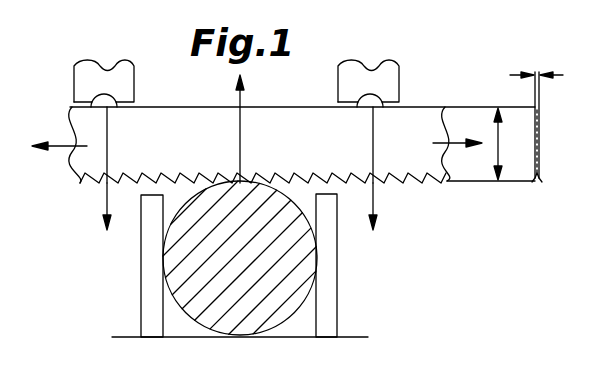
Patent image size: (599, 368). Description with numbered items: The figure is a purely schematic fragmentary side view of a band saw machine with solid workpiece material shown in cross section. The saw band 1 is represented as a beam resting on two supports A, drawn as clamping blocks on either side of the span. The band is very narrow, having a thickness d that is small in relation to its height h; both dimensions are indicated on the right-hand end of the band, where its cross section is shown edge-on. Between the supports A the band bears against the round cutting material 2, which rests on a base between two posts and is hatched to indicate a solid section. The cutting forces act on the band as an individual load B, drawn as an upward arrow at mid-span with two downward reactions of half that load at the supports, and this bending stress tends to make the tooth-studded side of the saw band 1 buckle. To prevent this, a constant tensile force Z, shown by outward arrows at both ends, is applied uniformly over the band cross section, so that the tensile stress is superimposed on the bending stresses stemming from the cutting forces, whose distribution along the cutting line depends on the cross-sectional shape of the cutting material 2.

The saw band 1 is at (280, 107).
The cutting material 2 is at (268, 310).
The supports A is at (95, 72).
The individual load B is at (233, 102).
The tensile force Z is at (66, 146).
The height h is at (502, 135).
The thickness d is at (536, 113).